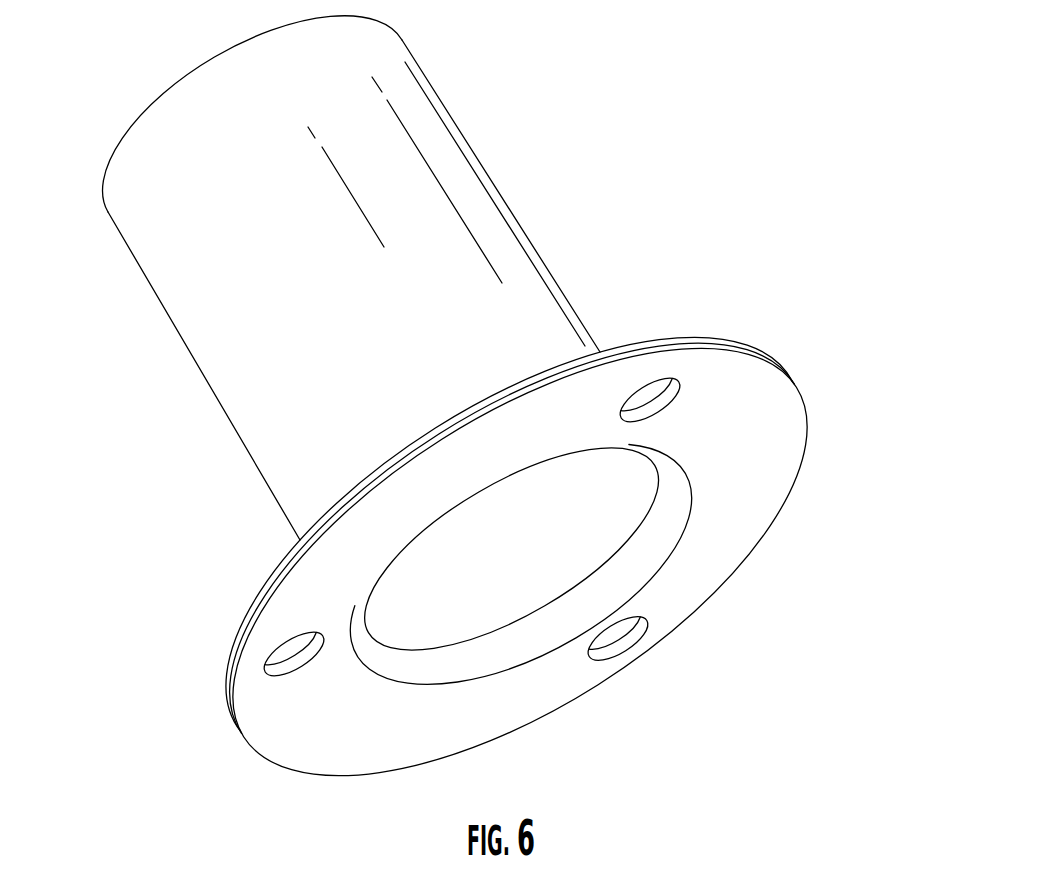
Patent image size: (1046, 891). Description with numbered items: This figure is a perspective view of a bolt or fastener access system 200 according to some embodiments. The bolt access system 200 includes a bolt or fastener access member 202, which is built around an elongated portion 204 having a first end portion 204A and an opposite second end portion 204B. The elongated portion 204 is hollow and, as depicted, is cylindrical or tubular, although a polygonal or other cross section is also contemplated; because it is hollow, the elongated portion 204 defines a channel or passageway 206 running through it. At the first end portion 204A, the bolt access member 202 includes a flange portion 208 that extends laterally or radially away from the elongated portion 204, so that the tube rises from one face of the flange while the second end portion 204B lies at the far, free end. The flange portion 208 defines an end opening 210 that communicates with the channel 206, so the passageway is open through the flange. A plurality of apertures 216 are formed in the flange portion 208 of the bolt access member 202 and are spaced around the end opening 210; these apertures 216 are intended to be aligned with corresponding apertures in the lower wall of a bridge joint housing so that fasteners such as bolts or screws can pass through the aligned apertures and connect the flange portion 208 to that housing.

The bolt access system 200 is at (673, 147).
The bolt access member 202 is at (655, 69).
The elongated portion 204 is at (391, 297).
The first end portion 204A is at (257, 538).
The second end portion 204B is at (80, 233).
The channel 206 is at (548, 512).
The flange portion 208 is at (795, 383).
The end opening 210 is at (511, 641).
The apertures 216 is at (299, 687).